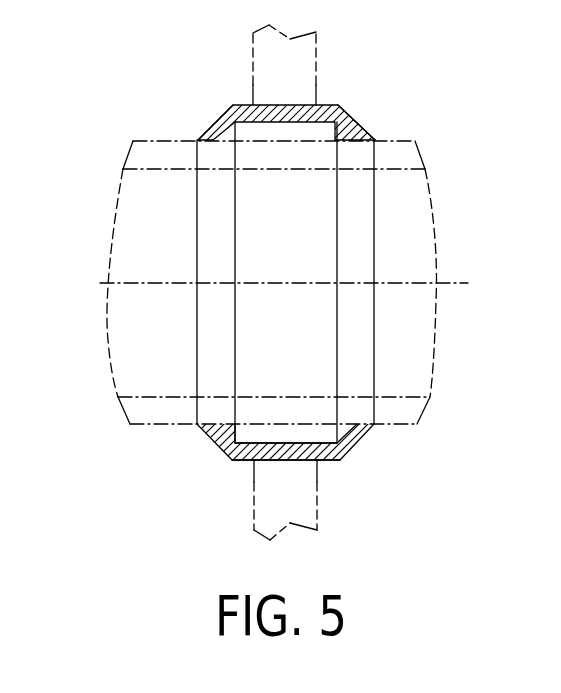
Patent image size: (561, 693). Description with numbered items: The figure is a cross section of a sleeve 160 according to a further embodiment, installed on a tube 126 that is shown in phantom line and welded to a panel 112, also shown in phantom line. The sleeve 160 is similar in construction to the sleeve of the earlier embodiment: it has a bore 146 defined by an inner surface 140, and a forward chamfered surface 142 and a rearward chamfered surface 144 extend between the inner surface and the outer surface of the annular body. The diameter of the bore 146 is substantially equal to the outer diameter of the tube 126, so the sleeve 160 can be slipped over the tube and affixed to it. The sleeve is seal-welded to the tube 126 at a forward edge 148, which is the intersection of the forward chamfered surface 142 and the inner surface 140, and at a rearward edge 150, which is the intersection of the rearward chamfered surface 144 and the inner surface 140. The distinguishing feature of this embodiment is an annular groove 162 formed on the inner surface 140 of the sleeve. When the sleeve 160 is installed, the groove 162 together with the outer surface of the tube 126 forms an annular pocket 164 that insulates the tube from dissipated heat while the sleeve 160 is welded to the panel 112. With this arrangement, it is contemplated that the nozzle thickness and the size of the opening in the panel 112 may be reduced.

The panel 112 is at (280, 78).
The tube 126 is at (133, 360).
The inner surface 140 is at (217, 142).
The forward chamfered surface 142 is at (217, 118).
The rearward chamfered surface 144 is at (356, 122).
The bore 146 is at (228, 257).
The forward edge 148 is at (197, 140).
The rearward edge 150 is at (375, 140).
The sleeve 160 is at (257, 251).
The annular groove 162 is at (306, 227).
The annular pocket 164 is at (290, 433).